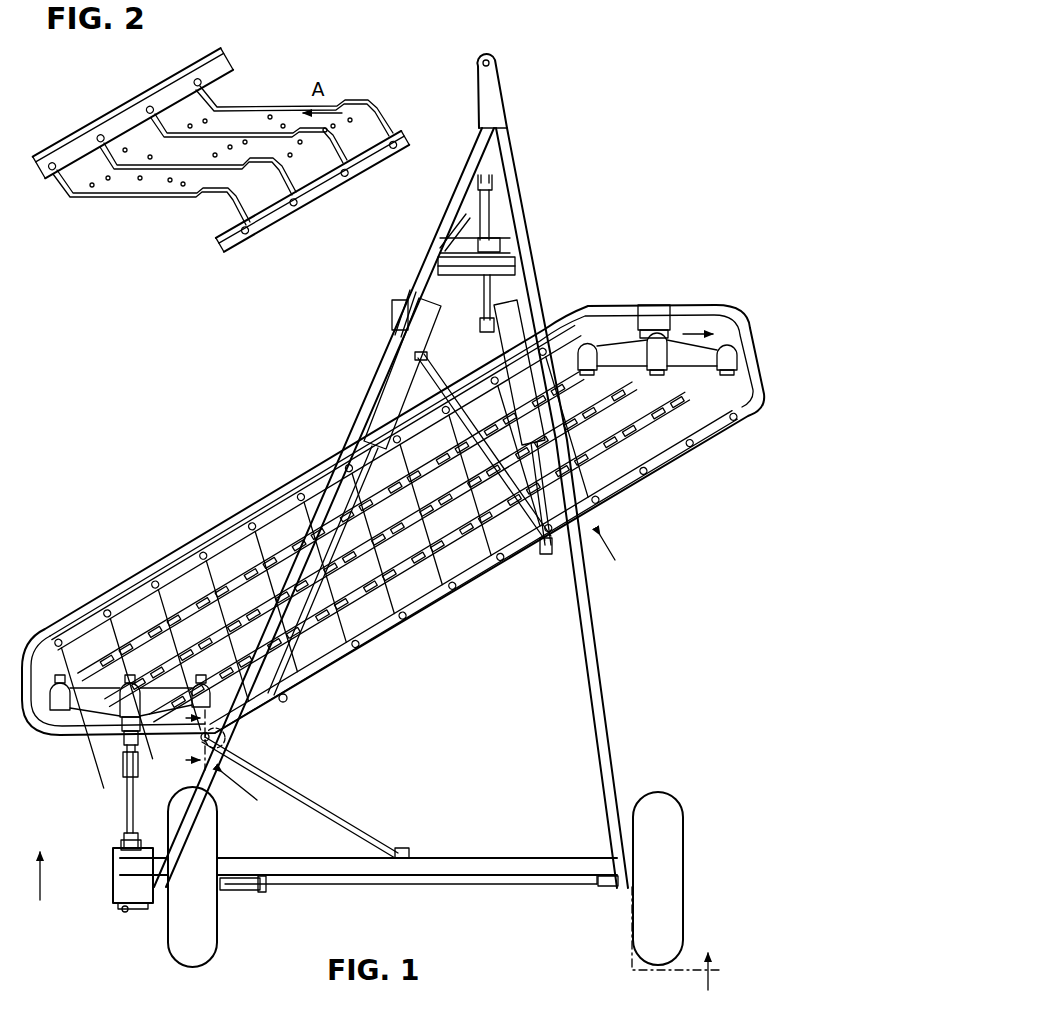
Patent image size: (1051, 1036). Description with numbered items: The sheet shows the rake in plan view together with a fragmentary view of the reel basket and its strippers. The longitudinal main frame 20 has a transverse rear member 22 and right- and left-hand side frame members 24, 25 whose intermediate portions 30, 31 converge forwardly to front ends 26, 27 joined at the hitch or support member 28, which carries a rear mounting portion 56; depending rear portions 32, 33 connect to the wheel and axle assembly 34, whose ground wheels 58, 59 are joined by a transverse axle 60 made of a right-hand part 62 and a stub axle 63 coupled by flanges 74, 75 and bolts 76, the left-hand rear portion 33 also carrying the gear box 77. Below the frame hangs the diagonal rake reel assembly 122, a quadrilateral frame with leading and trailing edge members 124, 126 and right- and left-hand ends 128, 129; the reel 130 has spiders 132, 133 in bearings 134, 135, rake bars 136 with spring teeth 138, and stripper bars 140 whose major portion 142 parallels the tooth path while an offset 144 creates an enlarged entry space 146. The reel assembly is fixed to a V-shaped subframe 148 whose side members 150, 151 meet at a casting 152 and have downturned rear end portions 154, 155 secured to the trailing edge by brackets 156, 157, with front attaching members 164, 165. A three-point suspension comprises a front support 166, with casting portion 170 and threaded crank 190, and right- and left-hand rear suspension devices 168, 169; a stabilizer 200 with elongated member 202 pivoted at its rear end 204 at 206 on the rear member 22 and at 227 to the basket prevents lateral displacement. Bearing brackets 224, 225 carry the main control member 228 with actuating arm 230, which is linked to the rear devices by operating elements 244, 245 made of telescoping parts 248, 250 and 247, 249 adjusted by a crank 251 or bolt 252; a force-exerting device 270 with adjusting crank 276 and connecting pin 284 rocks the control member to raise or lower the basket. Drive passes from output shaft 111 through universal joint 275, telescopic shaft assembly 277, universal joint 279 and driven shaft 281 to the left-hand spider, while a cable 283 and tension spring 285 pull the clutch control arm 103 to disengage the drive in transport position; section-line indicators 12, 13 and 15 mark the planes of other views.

In FIG. 1, the section line 12 is at (425, 672).
In FIG. 1, the section line 13 is at (184, 738).
In FIG. 1, the section line 15 is at (370, 933).
In FIG. 1, the main frame 20 is at (418, 515).
In FIG. 1, the transverse rear member 22 is at (498, 857).
In FIG. 1, the right-hand side frame member 24 is at (592, 668).
In FIG. 1, the left-hand side frame member 25 is at (362, 397).
In FIG. 1, the front end 26 is at (505, 147).
In FIG. 1, the front end 27 is at (478, 142).
In FIG. 1, the hitch or support member 28 is at (480, 70).
In FIG. 1, the intermediate portion 30 is at (591, 640).
In FIG. 1, the intermediate portion 31 is at (337, 438).
In FIG. 1, the rear portion 32 is at (619, 866).
In FIG. 1, the rear portion 33 is at (180, 848).
In FIG. 1, the wheel and axle assembly 34 is at (553, 893).
In FIG. 1, the rear mounting portion 56 is at (495, 165).
In FIG. 1, the right-hand ground wheel 58 is at (680, 927).
In FIG. 1, the left-hand ground wheel 59 is at (180, 956).
In FIG. 1, the transverse axle 60 is at (453, 888).
In FIG. 1, the right-hand axle part 62 is at (487, 886).
In FIG. 1, the stub axle 63 is at (230, 891).
In FIG. 1, the circular flange 74 is at (262, 891).
In FIG. 1, the flange 75 is at (258, 892).
In FIG. 1, the bolts 76 is at (268, 884).
In FIG. 1, the gear box 77 is at (118, 895).
In FIG. 1, the clutch control arm 103 is at (140, 910).
In FIG. 1, the output shaft 111 is at (120, 850).
In FIG. 2, the rake reel assembly 122 is at (216, 169).
In FIG. 1, the rake reel assembly 122 is at (391, 525).
In FIG. 2, the leading edge member 124 is at (104, 105).
In FIG. 1, the leading edge member 124 is at (238, 508).
In FIG. 2, the trailing edge member 126 is at (262, 224).
In FIG. 1, the trailing edge member 126 is at (440, 602).
In FIG. 1, the right-hand end 128 is at (662, 316).
In FIG. 1, the left-hand end 129 is at (48, 734).
In FIG. 1, the reel 130 is at (603, 332).
In FIG. 1, the right-hand spider 132 is at (630, 345).
In FIG. 1, the bearing 134 is at (664, 306).
In FIG. 1, the left-hand spider 133 is at (100, 705).
In FIG. 1, the bearing 135 is at (118, 742).
In FIG. 2, the rake bars 136 is at (222, 155).
In FIG. 1, the rake bars 136 is at (88, 630).
In FIG. 2, the spring raking teeth 138 is at (275, 104).
In FIG. 1, the spring raking teeth 138 is at (622, 462).
In FIG. 2, the stripper bars 140 is at (238, 156).
In FIG. 1, the stripper bars 140 is at (353, 516).
In FIG. 2, the major portion 142 is at (222, 108).
In FIG. 2, the offset 144 is at (356, 100).
In FIG. 1, the offset 144 is at (430, 553).
In FIG. 2, the space 146 is at (380, 113).
In FIG. 1, the subframe 148 is at (426, 360).
In FIG. 1, the right-hand subframe member 150 is at (465, 430).
In FIG. 1, the left-hand subframe member 151 is at (300, 690).
In FIG. 1, the casting 152 is at (396, 341).
In FIG. 1, the rear end portion 154 is at (547, 551).
In FIG. 1, the rear end portion 155 is at (280, 710).
In FIG. 1, the bracket member 156 is at (528, 562).
In FIG. 1, the bracket member 157 is at (287, 698).
In FIG. 1, the right-hand front attaching member 164 is at (438, 368).
In FIG. 1, the left-hand front attaching member 165 is at (352, 448).
In FIG. 1, the front support 166 is at (388, 306).
In FIG. 1, the right-hand rear suspension device 168 is at (556, 566).
In FIG. 1, the left-hand rear suspension device 169 is at (236, 728).
In FIG. 1, the casting portion 170 is at (392, 320).
In FIG. 1, the crank 190 is at (400, 298).
In FIG. 1, the stabilizer means 200 is at (328, 800).
In FIG. 1, the elongated member 202 is at (352, 818).
In FIG. 1, the right-hand rear end 204 is at (405, 848).
In FIG. 1, the pivot 206 is at (410, 854).
In FIG. 1, the bearing bracket 224 is at (520, 260).
In FIG. 1, the bearing bracket 225 is at (432, 255).
In FIG. 1, the pivot 227 is at (226, 740).
In FIG. 1, the main control member 228 is at (517, 268).
In FIG. 1, the actuating arm 230 is at (483, 304).
In FIG. 1, the right-hand operating element 244 is at (527, 316).
In FIG. 1, the left-hand operating element 245 is at (402, 372).
In FIG. 1, the tubular member 247 is at (380, 383).
In FIG. 1, the telescopic part 248 is at (512, 341).
In FIG. 1, the movable member 249 is at (346, 460).
In FIG. 1, the telescopic part 250 is at (550, 468).
In FIG. 1, the adjusting crank 251 is at (462, 220).
In FIG. 1, the adjusting bolt 252 is at (502, 242).
In FIG. 1, the force-exerting device 270 is at (494, 224).
In FIG. 1, the universal joint 275 is at (122, 841).
In FIG. 1, the adjusting crank 276 is at (478, 186).
In FIG. 1, the telescopic shaft assembly 277 is at (126, 805).
In FIG. 1, the universal joint 279 is at (122, 770).
In FIG. 1, the driven shaft 281 is at (138, 750).
In FIG. 1, the cable 283 is at (200, 825).
In FIG. 1, the connecting pin 284 is at (480, 326).
In FIG. 1, the tension spring 285 is at (124, 912).